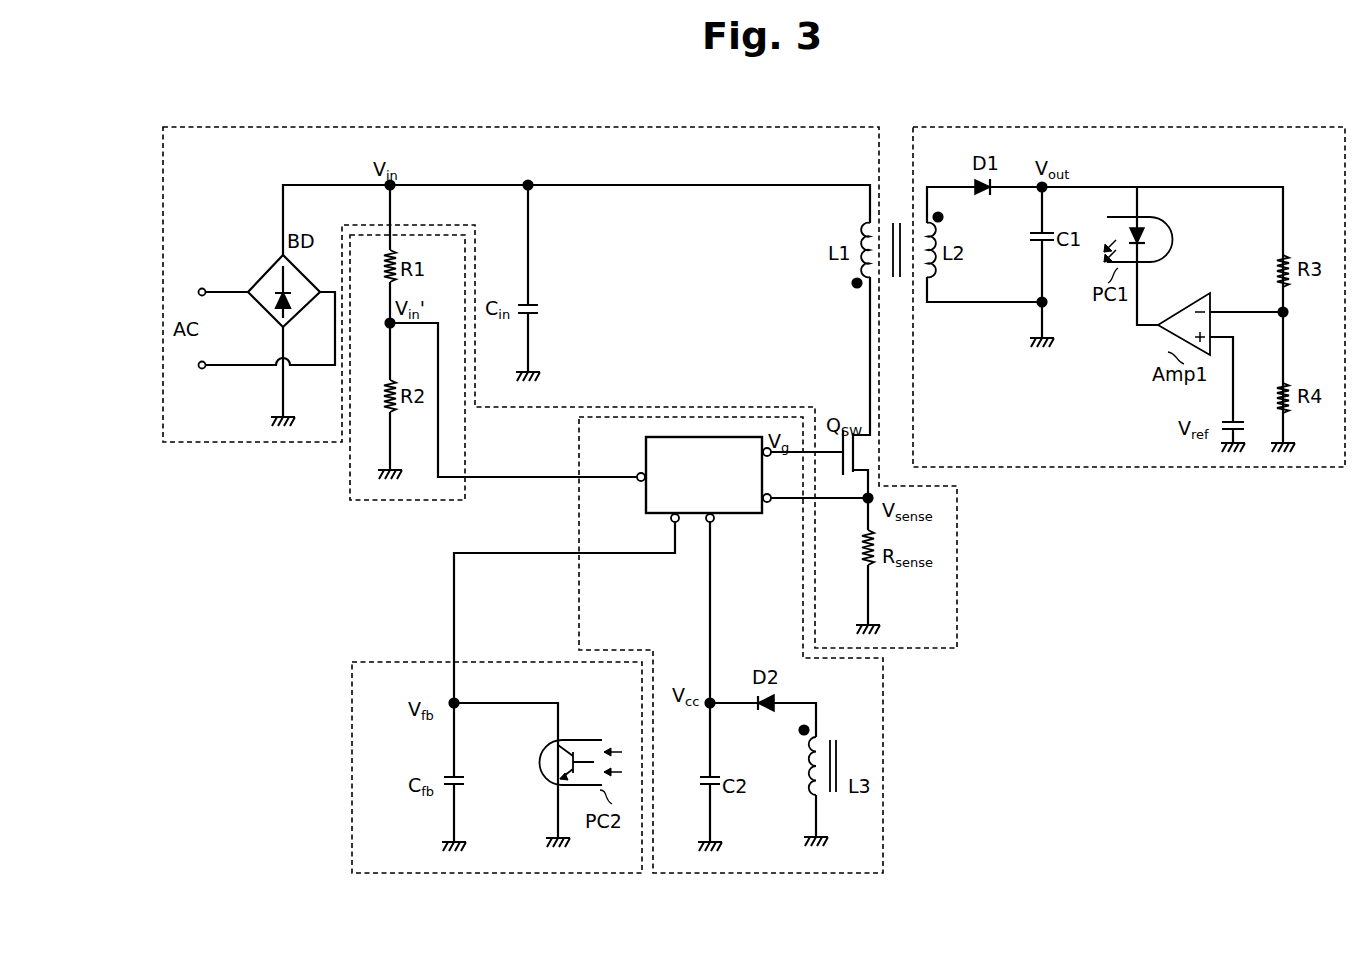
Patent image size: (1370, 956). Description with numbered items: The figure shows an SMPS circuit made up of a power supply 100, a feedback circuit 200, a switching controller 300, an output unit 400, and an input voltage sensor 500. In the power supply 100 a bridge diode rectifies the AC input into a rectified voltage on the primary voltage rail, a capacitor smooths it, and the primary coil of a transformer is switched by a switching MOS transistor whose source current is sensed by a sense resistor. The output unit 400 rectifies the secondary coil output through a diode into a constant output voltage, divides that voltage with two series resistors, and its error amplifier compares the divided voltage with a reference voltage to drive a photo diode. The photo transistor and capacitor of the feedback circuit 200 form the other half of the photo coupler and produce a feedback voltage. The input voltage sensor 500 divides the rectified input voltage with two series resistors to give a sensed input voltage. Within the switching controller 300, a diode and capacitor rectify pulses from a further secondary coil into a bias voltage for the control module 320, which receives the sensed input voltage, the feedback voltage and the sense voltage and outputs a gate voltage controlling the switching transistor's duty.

The power supply 100 is at (740, 126).
The feedback circuit 200 is at (392, 661).
The switching controller 300 is at (884, 762).
The control module 320 is at (738, 515).
The output unit 400 is at (1167, 126).
The input voltage sensor 500 is at (350, 481).